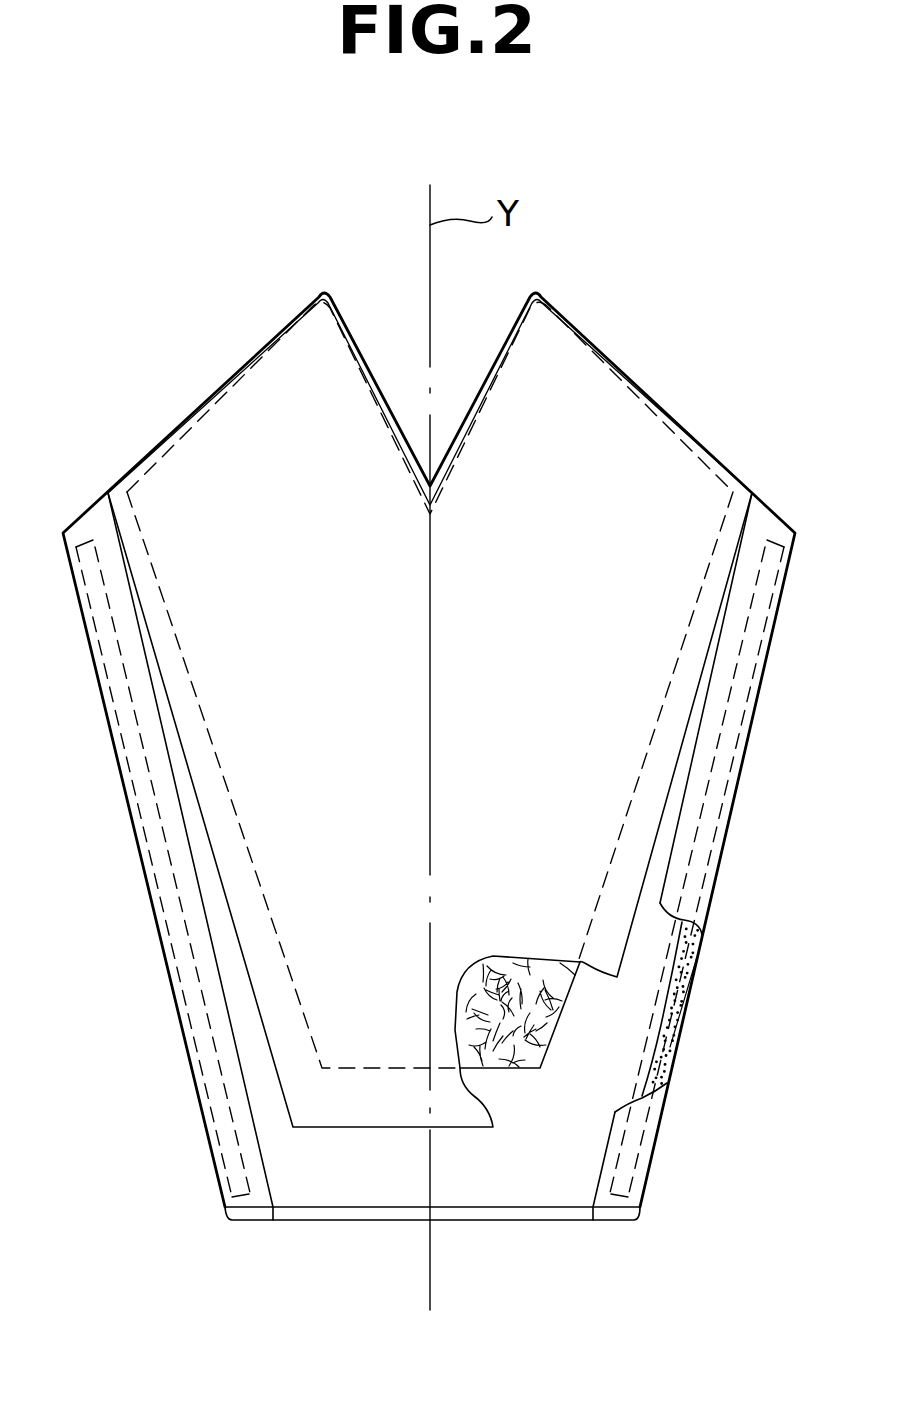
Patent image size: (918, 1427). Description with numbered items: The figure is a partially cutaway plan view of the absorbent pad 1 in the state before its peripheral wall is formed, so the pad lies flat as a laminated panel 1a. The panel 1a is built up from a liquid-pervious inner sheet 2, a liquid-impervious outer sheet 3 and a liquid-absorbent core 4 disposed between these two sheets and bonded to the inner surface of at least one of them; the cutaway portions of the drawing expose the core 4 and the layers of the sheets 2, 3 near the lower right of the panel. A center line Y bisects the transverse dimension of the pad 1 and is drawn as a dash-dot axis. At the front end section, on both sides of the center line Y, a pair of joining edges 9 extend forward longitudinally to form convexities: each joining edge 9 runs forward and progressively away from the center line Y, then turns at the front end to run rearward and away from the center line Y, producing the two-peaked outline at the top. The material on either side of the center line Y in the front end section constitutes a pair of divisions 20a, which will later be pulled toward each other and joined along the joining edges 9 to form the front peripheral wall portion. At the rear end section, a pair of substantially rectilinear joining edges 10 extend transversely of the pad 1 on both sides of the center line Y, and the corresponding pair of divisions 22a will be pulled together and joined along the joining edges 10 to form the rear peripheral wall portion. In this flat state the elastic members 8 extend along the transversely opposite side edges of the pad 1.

The absorbent pad 1 is at (585, 288).
The laminated panel 1a is at (487, 773).
The liquid-pervious inner sheet 2 is at (636, 848).
The liquid-impervious outer sheet 3 is at (585, 1180).
The liquid-absorbent core 4 is at (535, 1027).
The elastic members 8 is at (152, 828).
The joining edges 9 is at (257, 352).
The joining edges 10 is at (402, 1215).
The divisions 20a is at (197, 454).
The divisions 22a is at (343, 1187).